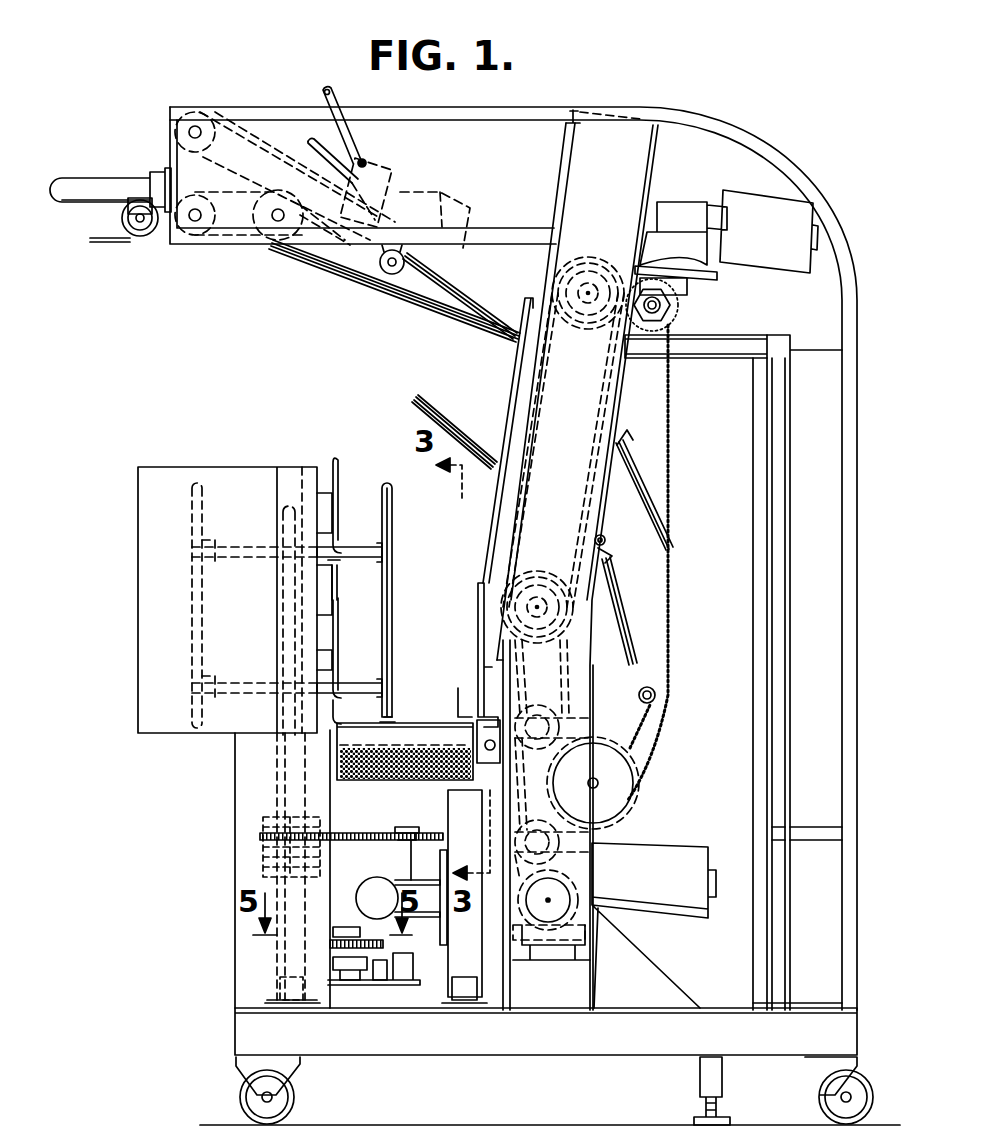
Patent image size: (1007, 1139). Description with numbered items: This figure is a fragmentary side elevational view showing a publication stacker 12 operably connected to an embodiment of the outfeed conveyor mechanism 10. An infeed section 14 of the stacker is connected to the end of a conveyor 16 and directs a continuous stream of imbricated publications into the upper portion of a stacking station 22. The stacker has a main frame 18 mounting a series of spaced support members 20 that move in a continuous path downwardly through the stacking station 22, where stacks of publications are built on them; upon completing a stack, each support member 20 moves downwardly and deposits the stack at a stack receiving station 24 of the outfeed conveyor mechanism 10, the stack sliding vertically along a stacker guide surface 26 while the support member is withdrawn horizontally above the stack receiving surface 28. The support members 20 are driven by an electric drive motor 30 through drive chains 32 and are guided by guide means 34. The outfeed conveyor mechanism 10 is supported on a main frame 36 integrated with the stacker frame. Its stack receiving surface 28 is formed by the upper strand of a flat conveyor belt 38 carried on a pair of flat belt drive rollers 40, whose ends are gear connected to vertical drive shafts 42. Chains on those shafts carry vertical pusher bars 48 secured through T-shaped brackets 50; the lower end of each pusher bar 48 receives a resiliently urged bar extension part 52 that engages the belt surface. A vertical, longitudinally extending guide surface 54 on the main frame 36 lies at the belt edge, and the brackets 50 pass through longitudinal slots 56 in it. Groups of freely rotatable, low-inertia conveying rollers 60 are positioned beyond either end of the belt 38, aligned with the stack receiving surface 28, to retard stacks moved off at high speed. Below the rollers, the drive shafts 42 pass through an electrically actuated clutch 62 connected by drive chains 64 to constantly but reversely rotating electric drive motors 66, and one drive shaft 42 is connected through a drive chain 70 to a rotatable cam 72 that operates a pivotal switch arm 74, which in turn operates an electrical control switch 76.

The outfeed conveyor mechanism 10 is at (232, 800).
The publication stacker 12 is at (766, 122).
The infeed section 14 is at (248, 222).
The conveyor 16 is at (100, 188).
The main frame 18 is at (612, 138).
The support members 20 is at (490, 328).
The stacking station 22 is at (472, 372).
The stack receiving station 24 is at (405, 657).
The stacker guide surface 26 is at (500, 605).
The stack receiving surface 28 is at (420, 725).
The electric drive motor 30 is at (645, 856).
The drive chains 32 is at (670, 645).
The guide means 34 is at (511, 398).
The main frame 36 is at (272, 964).
The flat conveyor belt 38 is at (465, 758).
The flat belt drive rollers 40 is at (340, 767).
The drive shafts 42 is at (280, 783).
The vertical pusher bars 48 is at (190, 517).
The T-shaped brackets 50 is at (252, 510).
The bar extension part 52 is at (388, 722).
The guide surface 54 is at (338, 612).
The longitudinal slots 56 is at (345, 548).
The conveying rollers 60 is at (434, 728).
The electrically actuated clutch 62 is at (265, 843).
The drive chains 64 is at (350, 833).
The electric drive motors 66 is at (385, 868).
The drive chain 70 is at (330, 947).
The rotatable cam 72 is at (355, 976).
The pivotal switch arm 74 is at (385, 984).
The electrical control switch 76 is at (402, 960).